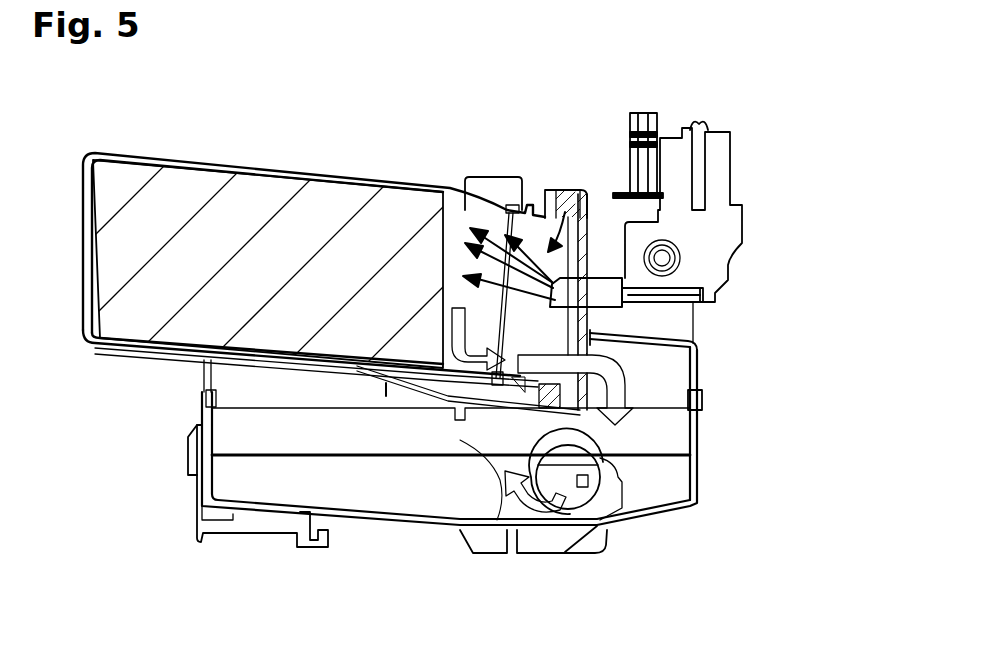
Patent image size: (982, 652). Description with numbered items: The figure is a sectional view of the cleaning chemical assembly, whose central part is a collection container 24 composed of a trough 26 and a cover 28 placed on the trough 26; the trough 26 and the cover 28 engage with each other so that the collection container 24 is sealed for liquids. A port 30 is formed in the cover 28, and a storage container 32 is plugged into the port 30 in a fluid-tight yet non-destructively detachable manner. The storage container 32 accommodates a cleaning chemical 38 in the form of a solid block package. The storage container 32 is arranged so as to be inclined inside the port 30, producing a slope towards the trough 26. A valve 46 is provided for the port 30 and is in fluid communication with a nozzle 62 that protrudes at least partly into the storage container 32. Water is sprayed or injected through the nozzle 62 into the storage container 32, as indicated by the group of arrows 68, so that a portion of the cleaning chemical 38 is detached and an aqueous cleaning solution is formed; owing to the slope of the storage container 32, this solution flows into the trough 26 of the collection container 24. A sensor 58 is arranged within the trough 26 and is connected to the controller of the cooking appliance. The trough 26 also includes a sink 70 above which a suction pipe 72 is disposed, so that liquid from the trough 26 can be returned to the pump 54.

The collection container 24 is at (733, 401).
The trough 26 is at (700, 430).
The cover 28 is at (695, 327).
The port 30 is at (501, 185).
The storage container 32 is at (296, 170).
The cleaning chemical 38 is at (155, 180).
The valve 46 is at (720, 232).
The pump 54 is at (240, 540).
The sensor 58 is at (597, 485).
The nozzle 62 is at (602, 288).
The group of arrows 68 is at (560, 190).
The sink 70 is at (540, 545).
The suction pipe 72 is at (487, 472).